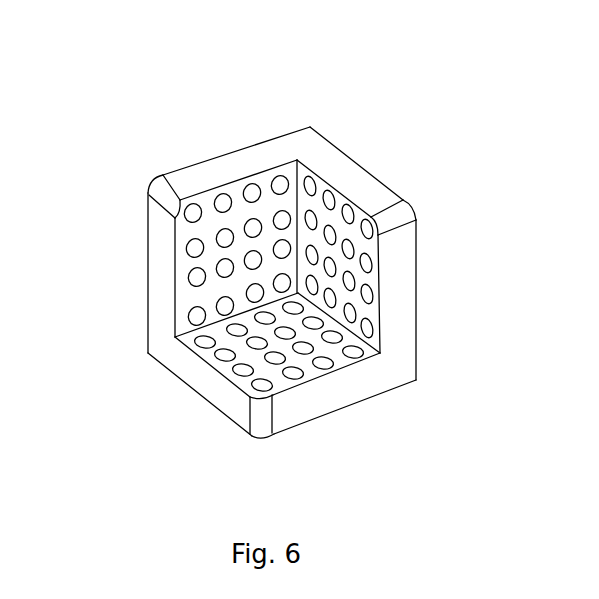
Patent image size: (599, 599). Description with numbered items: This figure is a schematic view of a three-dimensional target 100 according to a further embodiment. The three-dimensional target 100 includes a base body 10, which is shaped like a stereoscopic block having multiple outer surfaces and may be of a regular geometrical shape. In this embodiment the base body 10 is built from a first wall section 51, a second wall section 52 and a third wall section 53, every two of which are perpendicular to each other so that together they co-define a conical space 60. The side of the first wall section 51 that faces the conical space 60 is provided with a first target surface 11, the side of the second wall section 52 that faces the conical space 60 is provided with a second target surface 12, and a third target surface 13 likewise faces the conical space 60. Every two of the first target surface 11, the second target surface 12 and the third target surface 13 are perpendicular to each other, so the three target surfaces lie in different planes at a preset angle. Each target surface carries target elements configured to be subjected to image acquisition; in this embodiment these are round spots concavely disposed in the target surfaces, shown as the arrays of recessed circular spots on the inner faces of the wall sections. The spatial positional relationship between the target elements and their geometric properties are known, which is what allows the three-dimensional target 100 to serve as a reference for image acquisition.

The three-dimensional target 100 is at (185, 60).
The base body 10 is at (341, 97).
The first target surface 11 is at (210, 235).
The second target surface 12 is at (322, 192).
The third target surface 13 is at (250, 358).
The first wall section 51 is at (230, 172).
The second wall section 52 is at (366, 197).
The third wall section 53 is at (322, 398).
The conical space 60 is at (257, 297).